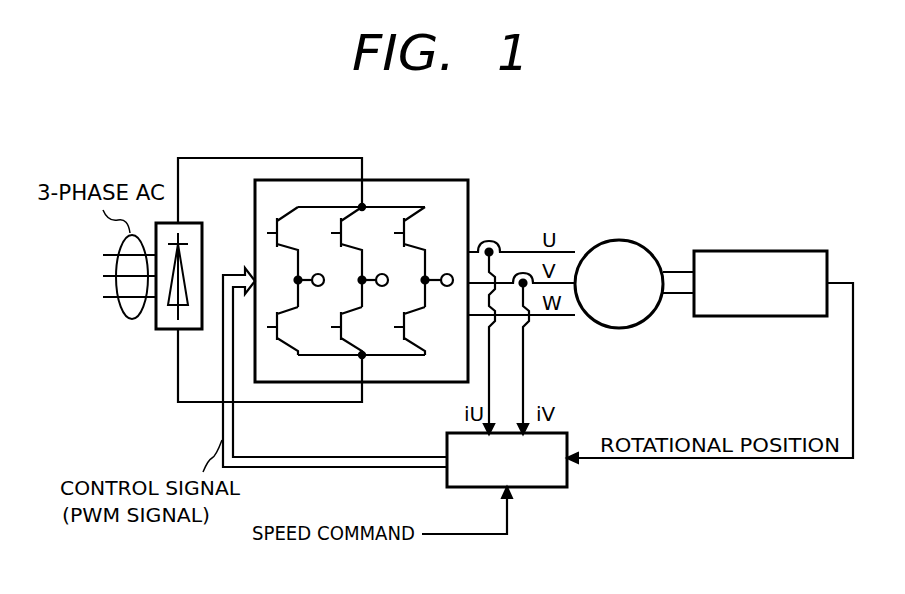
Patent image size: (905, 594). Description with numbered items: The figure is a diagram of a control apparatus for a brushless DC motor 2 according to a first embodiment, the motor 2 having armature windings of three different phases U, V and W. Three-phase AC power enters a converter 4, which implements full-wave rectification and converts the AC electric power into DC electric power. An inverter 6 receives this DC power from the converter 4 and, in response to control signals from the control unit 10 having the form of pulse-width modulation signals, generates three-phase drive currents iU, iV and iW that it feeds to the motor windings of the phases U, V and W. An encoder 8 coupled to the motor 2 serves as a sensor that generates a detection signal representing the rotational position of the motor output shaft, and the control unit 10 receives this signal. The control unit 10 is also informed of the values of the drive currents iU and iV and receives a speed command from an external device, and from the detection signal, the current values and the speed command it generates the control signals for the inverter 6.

The brushless DC motor 2 is at (642, 242).
The converter 4 is at (167, 333).
The inverter 6 is at (437, 178).
The encoder 8 is at (808, 250).
The control unit 10 is at (550, 490).